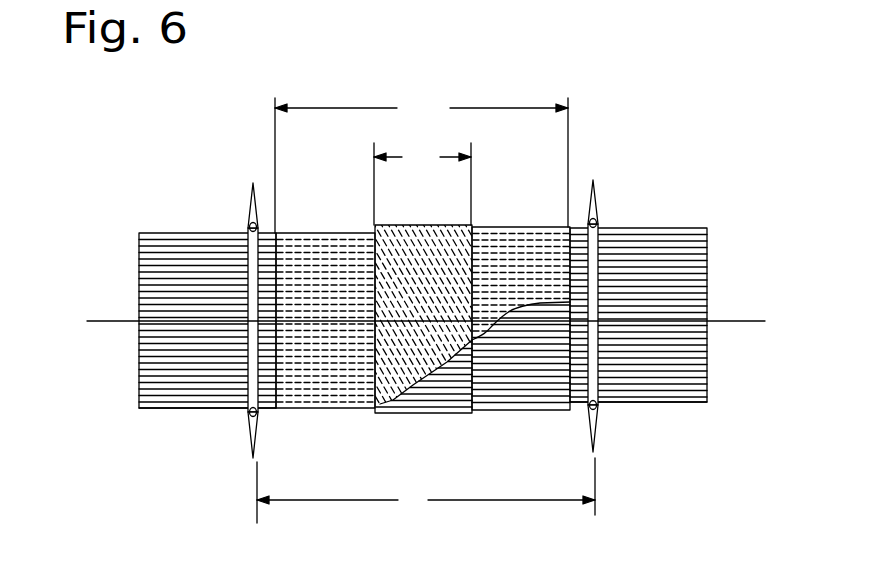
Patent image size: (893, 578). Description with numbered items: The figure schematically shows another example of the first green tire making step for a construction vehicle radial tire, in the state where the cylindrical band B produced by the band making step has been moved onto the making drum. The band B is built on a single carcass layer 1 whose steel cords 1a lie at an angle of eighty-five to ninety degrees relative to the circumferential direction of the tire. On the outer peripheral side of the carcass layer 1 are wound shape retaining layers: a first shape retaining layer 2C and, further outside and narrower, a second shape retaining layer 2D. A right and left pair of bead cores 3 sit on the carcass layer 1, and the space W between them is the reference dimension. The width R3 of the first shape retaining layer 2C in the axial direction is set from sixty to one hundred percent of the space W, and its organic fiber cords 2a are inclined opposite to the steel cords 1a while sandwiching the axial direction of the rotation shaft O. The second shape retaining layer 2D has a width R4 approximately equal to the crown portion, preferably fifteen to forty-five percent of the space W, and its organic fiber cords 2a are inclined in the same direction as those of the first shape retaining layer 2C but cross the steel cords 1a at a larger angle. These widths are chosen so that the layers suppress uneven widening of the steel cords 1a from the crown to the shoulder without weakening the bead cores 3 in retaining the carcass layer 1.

The carcass layer 1 is at (682, 228).
The steel cords 1a is at (180, 403).
The organic fiber cords 2a is at (313, 398).
The first shape retaining layer 2C is at (503, 227).
The second shape retaining layer 2D is at (415, 226).
The bead cores 3 is at (249, 226).
The cylindrical band B is at (687, 144).
The rotation shaft O is at (750, 320).
The width of the first shape retaining layer R3 is at (421, 165).
The width of the second shape retaining layer R4 is at (422, 184).
The space between the bead cores W is at (426, 490).